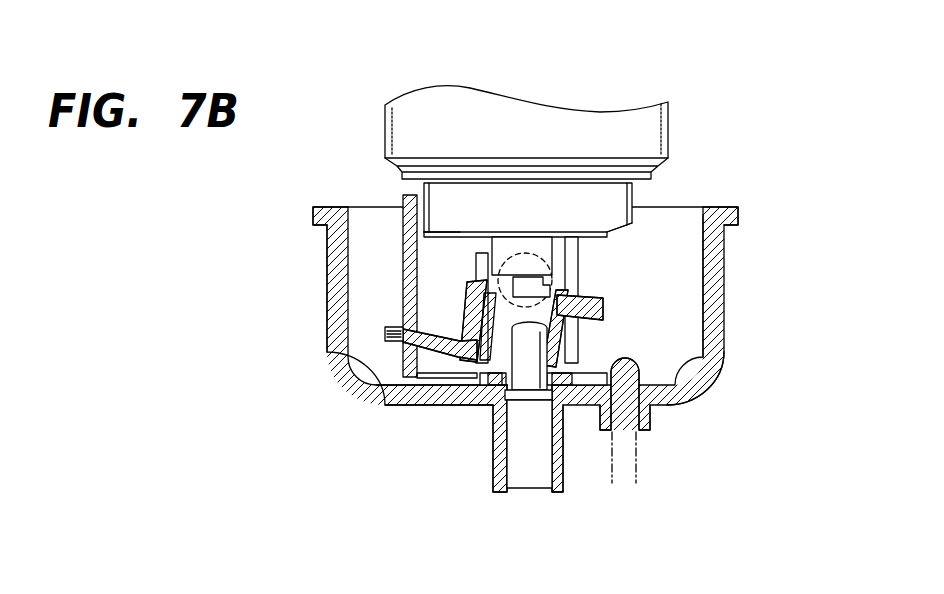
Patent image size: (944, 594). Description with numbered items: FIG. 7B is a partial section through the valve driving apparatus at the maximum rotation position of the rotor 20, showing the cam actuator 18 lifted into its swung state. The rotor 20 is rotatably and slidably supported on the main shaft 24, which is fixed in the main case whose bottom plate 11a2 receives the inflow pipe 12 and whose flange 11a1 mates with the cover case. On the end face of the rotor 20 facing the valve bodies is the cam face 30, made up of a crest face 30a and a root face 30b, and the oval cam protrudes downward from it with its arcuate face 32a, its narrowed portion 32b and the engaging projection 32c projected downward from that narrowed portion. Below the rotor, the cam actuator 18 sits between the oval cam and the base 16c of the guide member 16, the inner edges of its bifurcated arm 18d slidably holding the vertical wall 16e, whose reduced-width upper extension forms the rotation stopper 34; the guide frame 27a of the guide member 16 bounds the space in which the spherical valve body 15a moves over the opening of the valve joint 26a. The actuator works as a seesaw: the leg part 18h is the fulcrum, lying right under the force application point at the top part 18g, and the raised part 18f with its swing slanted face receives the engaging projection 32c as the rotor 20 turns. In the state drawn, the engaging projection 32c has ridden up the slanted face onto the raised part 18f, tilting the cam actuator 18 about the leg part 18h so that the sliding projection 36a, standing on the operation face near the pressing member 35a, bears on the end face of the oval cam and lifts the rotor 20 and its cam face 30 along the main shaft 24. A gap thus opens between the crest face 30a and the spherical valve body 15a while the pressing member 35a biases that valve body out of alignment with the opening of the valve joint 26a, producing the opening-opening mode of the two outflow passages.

The inflow pipe 12 is at (638, 467).
The spherical valve body 15a is at (572, 252).
The guide member 16 is at (383, 308).
The base of the guide member 16c is at (628, 358).
The vertical wall 16e is at (314, 210).
The cam actuator 18 is at (680, 372).
The bifurcated arm 18d is at (386, 338).
The raised part 18f is at (603, 318).
The top part 18g is at (706, 313).
The leg part 18h is at (562, 425).
The rotor 20 is at (670, 123).
The main shaft 24 is at (446, 405).
The valve joint 26a is at (492, 455).
The guide frame 27a is at (700, 398).
The cam face 30 is at (632, 207).
The crest face 30a is at (440, 234).
The root face 30b is at (622, 240).
The arcuate face 32a is at (467, 284).
The narrowed portion 32b is at (578, 272).
The engaging projection 32c is at (603, 297).
The rotation stopper 34 is at (403, 196).
The pressing member 35a is at (512, 275).
The sliding projection 36a is at (549, 237).
The flange 11a1 is at (740, 210).
The bottom plate 11a2 is at (422, 405).